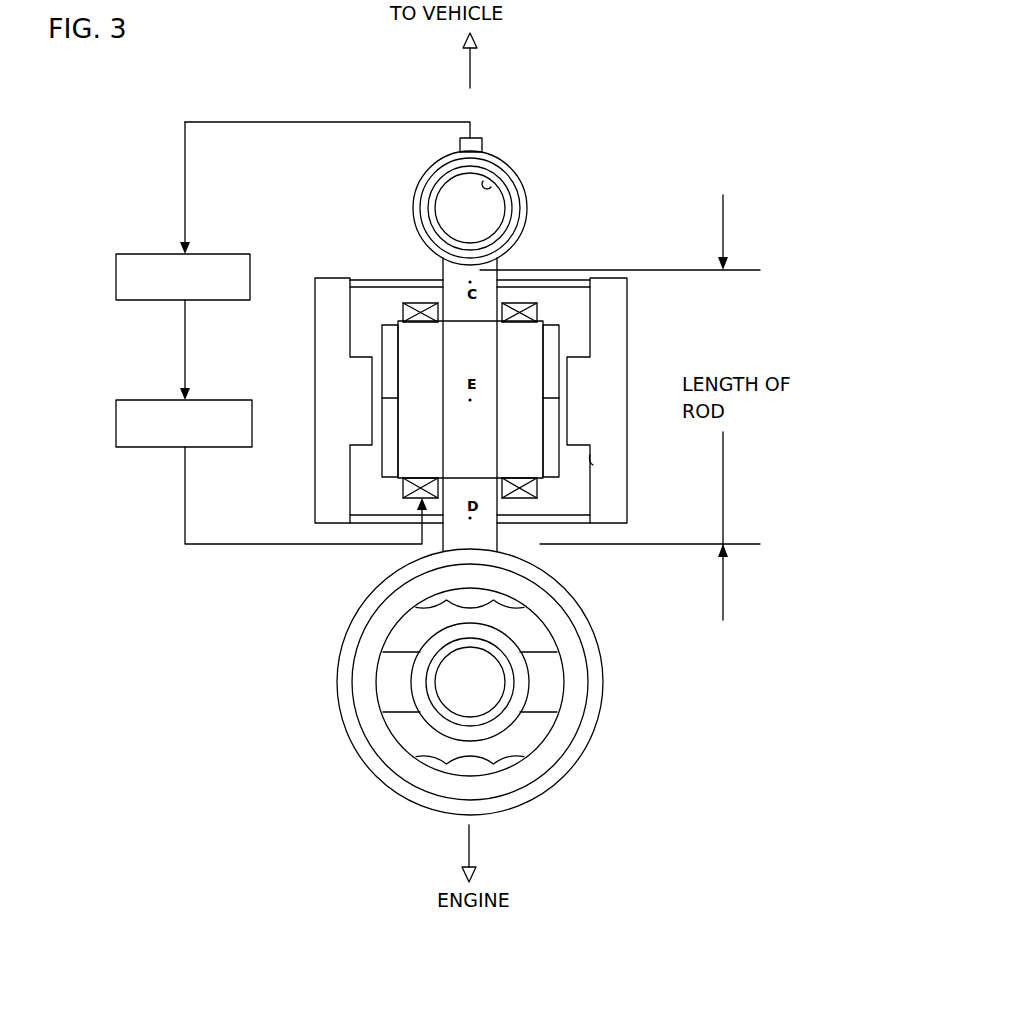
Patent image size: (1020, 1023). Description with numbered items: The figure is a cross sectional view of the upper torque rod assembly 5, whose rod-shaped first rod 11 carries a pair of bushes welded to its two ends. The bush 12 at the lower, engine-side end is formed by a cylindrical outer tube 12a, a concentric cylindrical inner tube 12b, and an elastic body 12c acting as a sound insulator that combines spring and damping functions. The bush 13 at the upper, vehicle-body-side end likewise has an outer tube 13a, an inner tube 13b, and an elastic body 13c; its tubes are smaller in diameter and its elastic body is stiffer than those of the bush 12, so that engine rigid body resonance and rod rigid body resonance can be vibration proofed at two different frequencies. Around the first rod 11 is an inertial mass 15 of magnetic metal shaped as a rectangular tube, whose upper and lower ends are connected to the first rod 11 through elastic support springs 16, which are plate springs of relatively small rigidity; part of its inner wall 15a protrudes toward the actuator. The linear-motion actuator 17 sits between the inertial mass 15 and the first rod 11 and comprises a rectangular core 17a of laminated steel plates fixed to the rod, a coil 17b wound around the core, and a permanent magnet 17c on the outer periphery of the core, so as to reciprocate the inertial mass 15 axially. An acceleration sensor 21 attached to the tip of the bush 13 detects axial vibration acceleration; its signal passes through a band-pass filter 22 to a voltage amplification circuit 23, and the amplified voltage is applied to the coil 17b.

The first torque rod assembly 5 is at (657, 188).
The first rod 11 is at (480, 271).
The bush 12 is at (533, 682).
The outer tube 12a is at (592, 657).
The inner tube 12b is at (487, 693).
The elastic body 12c is at (542, 667).
The bush 13 is at (508, 185).
The outer tube 13a is at (523, 182).
The inner tube 13b is at (498, 179).
The elastic body 13c is at (503, 170).
The inertial mass 15 is at (614, 318).
The inner wall 15a is at (592, 463).
The elastic support spring 16 is at (538, 280).
The actuator 17 is at (432, 342).
The core 17a is at (414, 332).
The coil 17b is at (423, 312).
The permanent magnet 17c is at (390, 332).
The acceleration sensor 21 is at (457, 146).
The band-pass filter 22 is at (228, 264).
The voltage amplification circuit 23 is at (229, 404).